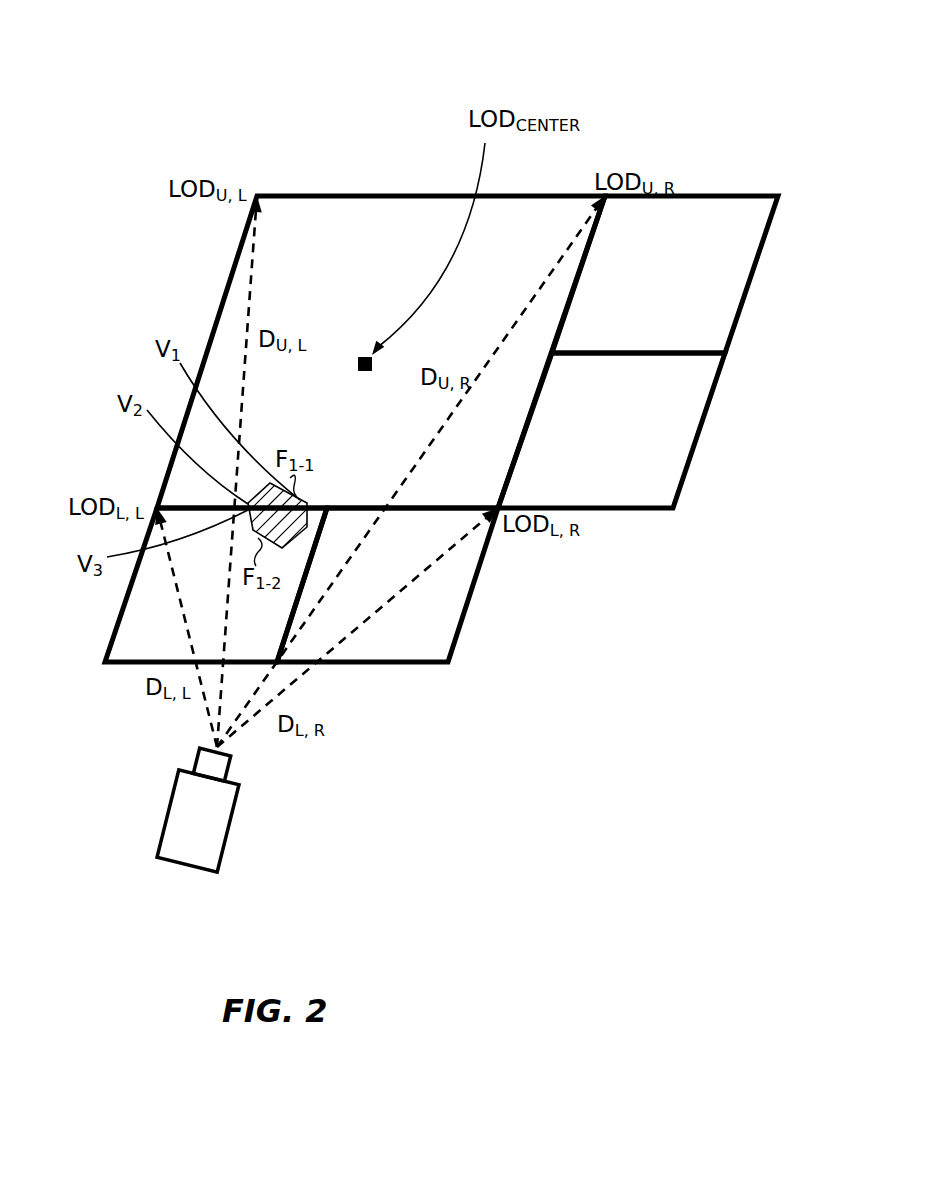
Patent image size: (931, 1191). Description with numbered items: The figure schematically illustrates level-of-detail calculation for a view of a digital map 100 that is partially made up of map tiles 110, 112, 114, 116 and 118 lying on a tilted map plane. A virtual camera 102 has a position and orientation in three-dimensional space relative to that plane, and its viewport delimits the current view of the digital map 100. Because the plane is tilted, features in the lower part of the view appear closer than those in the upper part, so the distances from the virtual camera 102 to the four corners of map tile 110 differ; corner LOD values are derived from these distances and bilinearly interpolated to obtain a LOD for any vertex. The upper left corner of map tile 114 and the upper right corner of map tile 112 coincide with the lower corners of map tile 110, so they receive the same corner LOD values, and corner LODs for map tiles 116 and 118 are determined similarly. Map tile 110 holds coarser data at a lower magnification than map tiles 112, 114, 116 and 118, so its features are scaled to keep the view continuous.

The digital map 100 is at (258, 40).
The virtual camera 102 is at (162, 837).
The map tile 110 is at (380, 194).
The map tile 112 is at (457, 640).
The map tile 114 is at (104, 657).
The map tile 116 is at (713, 195).
The map tile 118 is at (653, 511).